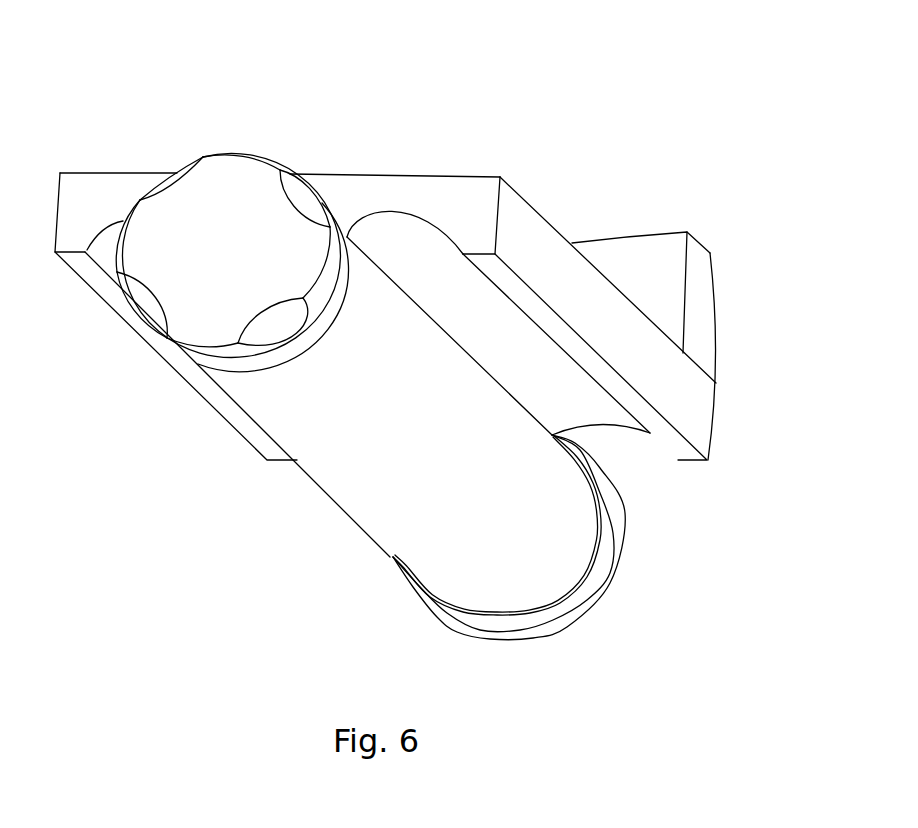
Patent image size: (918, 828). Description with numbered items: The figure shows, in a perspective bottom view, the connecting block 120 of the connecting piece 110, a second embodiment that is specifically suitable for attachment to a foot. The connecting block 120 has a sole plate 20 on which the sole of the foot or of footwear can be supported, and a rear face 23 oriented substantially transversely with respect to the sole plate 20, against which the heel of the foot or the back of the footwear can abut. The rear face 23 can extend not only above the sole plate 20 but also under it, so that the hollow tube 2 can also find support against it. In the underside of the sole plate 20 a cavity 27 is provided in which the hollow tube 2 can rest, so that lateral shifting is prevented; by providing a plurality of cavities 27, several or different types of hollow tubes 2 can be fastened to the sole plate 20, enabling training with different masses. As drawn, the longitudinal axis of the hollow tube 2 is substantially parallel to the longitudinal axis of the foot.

The hollow tube 2 is at (385, 498).
The sole plate 20 is at (92, 193).
The rear face 23 is at (642, 263).
The cavity 27 is at (105, 253).
The connecting piece 110 is at (412, 143).
The connecting block 120 is at (688, 398).